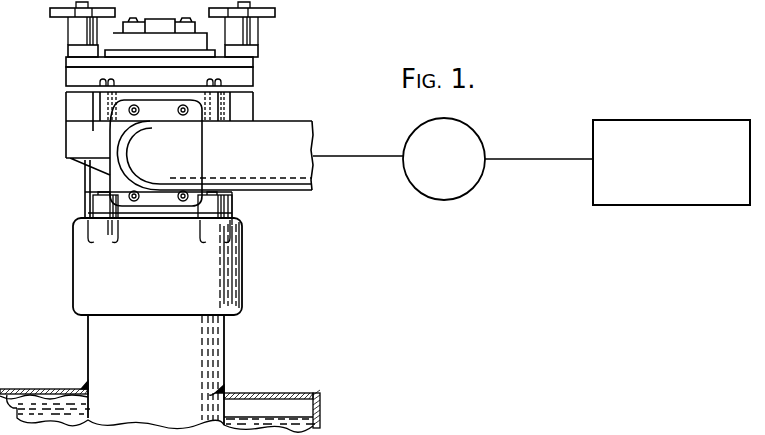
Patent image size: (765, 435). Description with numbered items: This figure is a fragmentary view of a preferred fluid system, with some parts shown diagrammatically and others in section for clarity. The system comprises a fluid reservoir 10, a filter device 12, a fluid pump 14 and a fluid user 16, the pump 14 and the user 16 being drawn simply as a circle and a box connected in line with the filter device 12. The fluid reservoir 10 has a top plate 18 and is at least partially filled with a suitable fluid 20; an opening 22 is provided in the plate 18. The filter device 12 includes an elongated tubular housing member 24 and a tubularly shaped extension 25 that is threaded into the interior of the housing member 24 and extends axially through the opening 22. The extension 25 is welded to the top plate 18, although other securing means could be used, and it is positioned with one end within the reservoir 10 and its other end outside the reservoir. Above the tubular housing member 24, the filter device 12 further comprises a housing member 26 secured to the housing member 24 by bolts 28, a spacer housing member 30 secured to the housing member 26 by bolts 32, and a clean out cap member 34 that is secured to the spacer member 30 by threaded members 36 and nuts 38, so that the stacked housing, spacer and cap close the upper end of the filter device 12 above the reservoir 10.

The fluid reservoir 10 is at (321, 407).
The filter device 12 is at (243, 290).
The fluid pump 14 is at (457, 196).
The fluid user 16 is at (686, 198).
The top plate 18 is at (296, 393).
The fluid 20 is at (318, 418).
The opening 22 is at (228, 390).
The tubular housing member 24 is at (238, 245).
The tubular extension 25 is at (222, 352).
The housing member 26 is at (250, 106).
The bolts 28 is at (100, 195).
The spacer housing member 30 is at (70, 72).
The bolts 32 is at (100, 82).
The clean out cap member 34 is at (255, 57).
The threaded members 36 is at (76, 5).
The nuts 38 is at (72, 31).